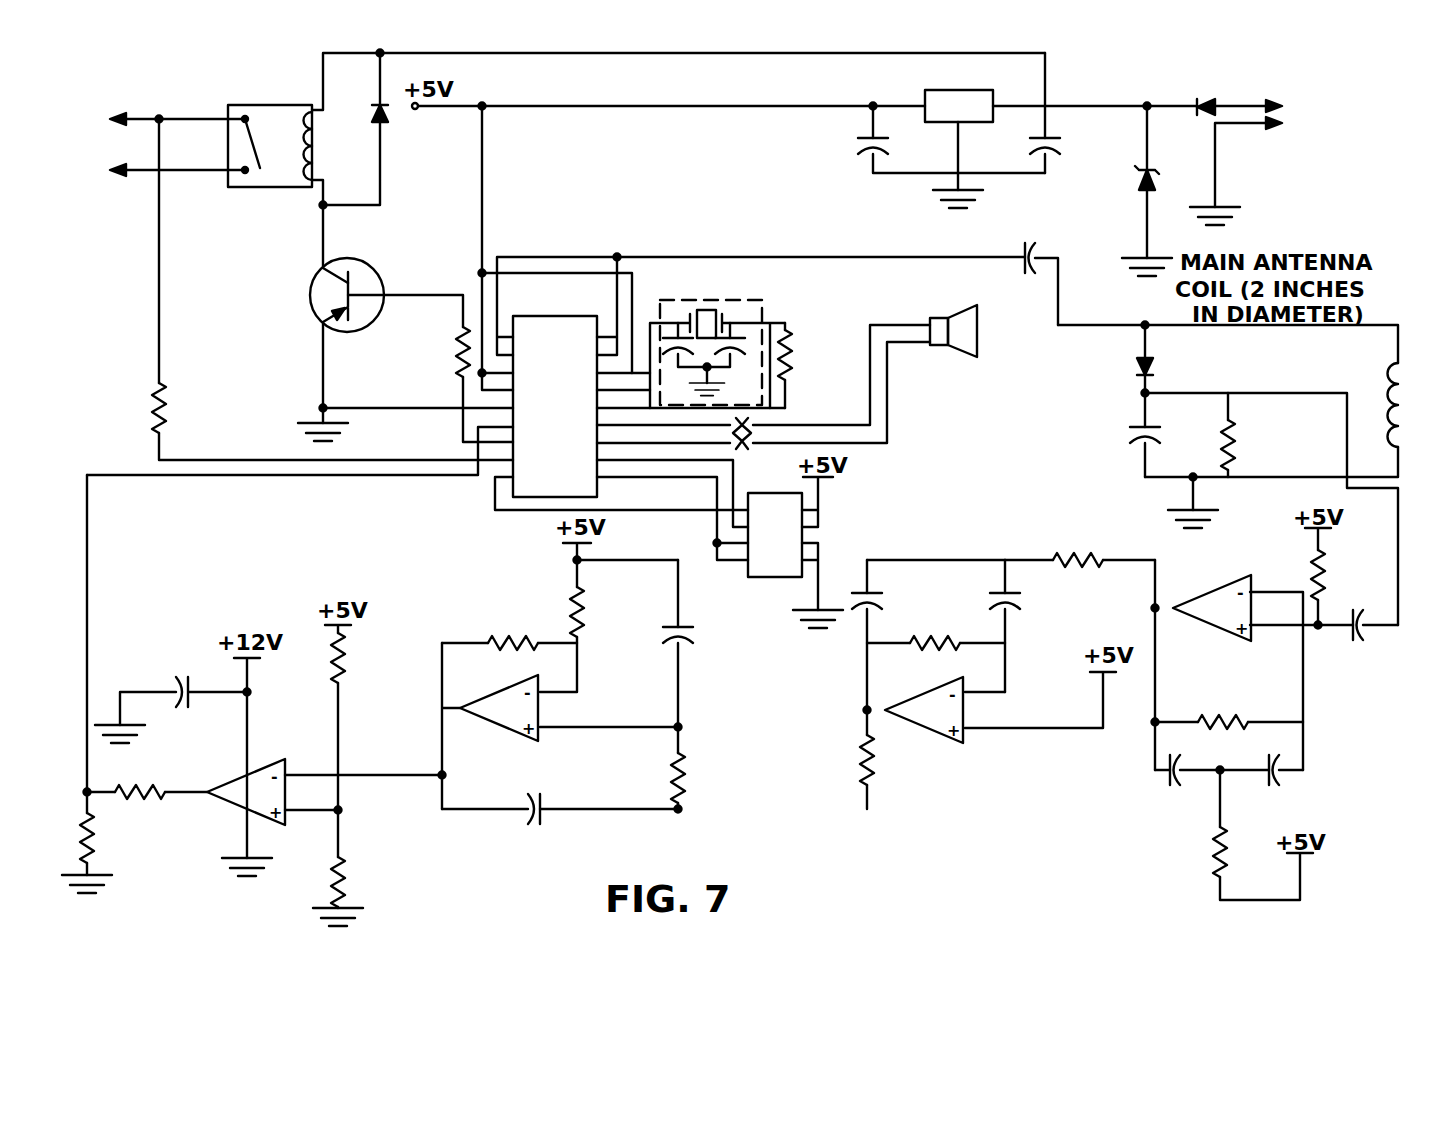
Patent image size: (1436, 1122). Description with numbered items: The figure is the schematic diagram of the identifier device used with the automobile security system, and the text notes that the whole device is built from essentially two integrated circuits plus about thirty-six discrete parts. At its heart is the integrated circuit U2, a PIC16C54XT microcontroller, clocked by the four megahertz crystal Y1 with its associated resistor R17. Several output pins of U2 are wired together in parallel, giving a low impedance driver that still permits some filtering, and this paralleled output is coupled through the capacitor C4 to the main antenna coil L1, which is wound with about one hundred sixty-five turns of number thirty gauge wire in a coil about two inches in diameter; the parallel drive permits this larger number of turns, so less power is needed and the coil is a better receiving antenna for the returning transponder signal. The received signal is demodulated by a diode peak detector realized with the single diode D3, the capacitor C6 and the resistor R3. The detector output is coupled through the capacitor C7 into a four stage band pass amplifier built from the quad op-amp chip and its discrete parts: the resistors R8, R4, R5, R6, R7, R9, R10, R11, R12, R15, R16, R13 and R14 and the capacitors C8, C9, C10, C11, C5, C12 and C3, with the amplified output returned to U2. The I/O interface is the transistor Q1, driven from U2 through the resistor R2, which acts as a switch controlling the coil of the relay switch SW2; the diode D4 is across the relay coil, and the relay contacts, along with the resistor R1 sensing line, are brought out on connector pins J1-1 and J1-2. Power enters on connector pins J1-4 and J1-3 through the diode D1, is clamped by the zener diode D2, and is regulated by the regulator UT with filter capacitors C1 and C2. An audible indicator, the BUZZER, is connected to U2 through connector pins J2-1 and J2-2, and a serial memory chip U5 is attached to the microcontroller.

The relay switch SW2 is at (270, 132).
The diode D4 is at (399, 125).
The connector J1 pin 1 J1-1 is at (149, 119).
The connector J1 pin 2 J1-2 is at (149, 170).
The connector J1 pin 3 J1-3 is at (1270, 168).
The connector J1 pin 4 J1-4 is at (1283, 97).
The resistor R1 is at (332, 289).
The transistor Q1 is at (363, 330).
The resistor R2 is at (430, 368).
The microcontroller integrated circuit U2 is at (555, 393).
The crystal Y1 is at (717, 342).
The resistor R17 is at (811, 365).
The connector J2 pin 1 J2-1 is at (763, 375).
The connector J2 pin 2 J2-2 is at (763, 395).
The buzzer BUZZER is at (959, 354).
The EEPROM integrated circuit U5 is at (781, 548).
The voltage regulator UT is at (959, 135).
The capacitor C1 is at (927, 139).
The capacitor C2 is at (1069, 113).
The zener diode D2 is at (1106, 191).
The diode D1 is at (1207, 111).
The capacitor C4 is at (1034, 284).
The diode D3 is at (1192, 359).
The capacitor C6 is at (1120, 435).
The resistor R3 is at (1246, 435).
The antenna coil L1 is at (1367, 391).
The resistor R8 is at (1337, 576).
The capacitor C7 is at (1371, 640).
The resistor R4 is at (1080, 546).
The resistor R5 is at (1229, 737).
The capacitor C8 is at (1187, 786).
The capacitor C9 is at (1261, 786).
The resistor R6 is at (1242, 835).
The capacitor C11 is at (897, 635).
The capacitor C10 is at (1033, 626).
The resistor R7 is at (936, 659).
The resistor R9 is at (844, 759).
The resistor R10 is at (653, 768).
The capacitor C5 is at (698, 643).
The resistor R11 is at (589, 617).
The resistor R12 is at (509, 632).
The capacitor C12 is at (560, 825).
The resistor R16 is at (106, 842).
The resistor R15 is at (147, 778).
The capacitor C3 is at (171, 710).
The resistor R13 is at (363, 717).
The resistor R14 is at (357, 868).